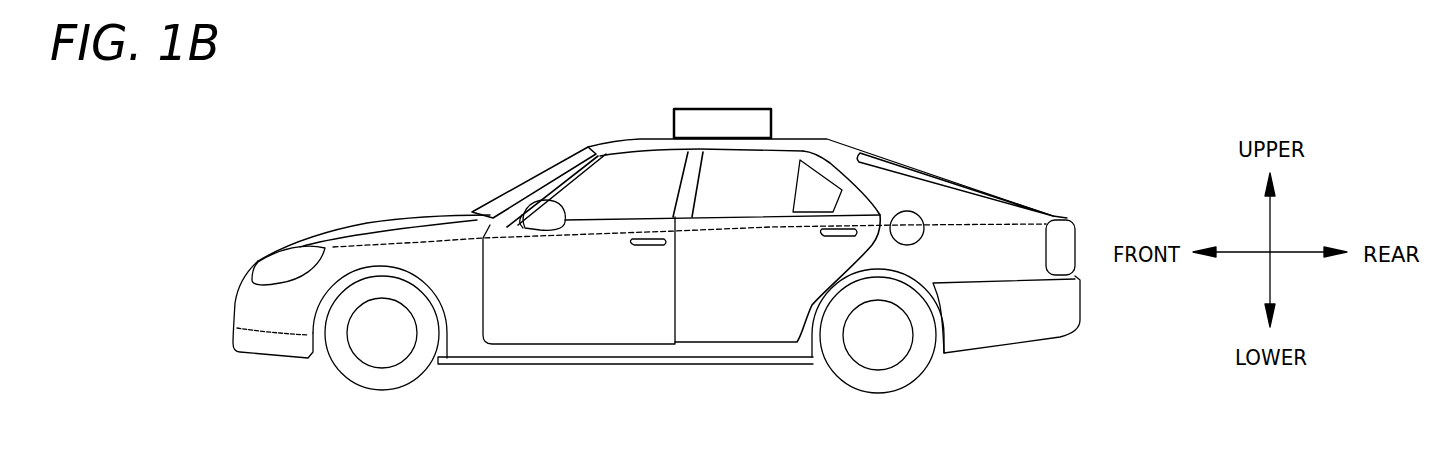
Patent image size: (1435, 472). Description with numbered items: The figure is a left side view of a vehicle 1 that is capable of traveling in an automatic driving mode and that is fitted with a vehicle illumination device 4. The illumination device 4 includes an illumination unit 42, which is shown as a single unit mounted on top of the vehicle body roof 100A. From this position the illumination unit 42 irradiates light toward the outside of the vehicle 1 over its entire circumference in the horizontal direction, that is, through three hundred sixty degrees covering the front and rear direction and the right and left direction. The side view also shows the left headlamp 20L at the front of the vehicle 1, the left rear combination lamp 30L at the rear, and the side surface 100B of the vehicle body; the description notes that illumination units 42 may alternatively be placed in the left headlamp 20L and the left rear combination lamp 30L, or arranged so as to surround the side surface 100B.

The vehicle 1 is at (396, 154).
The vehicle illumination device 4 is at (724, 108).
The illumination unit 42 is at (760, 108).
The vehicle body roof 100A is at (828, 144).
The side surface 100B is at (593, 328).
The left headlamp 20L is at (272, 263).
The left rear combination lamp 30L is at (1072, 230).